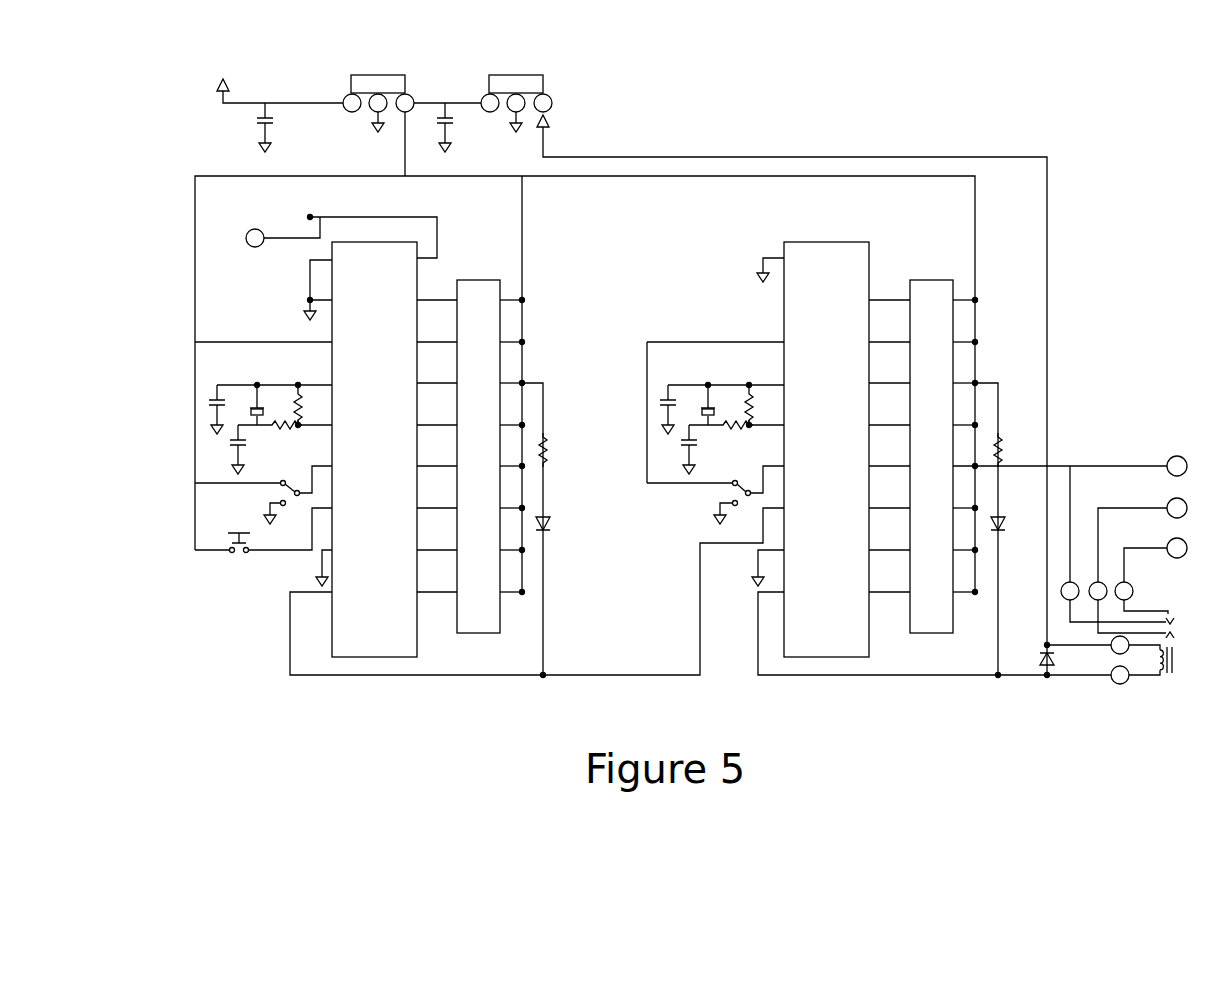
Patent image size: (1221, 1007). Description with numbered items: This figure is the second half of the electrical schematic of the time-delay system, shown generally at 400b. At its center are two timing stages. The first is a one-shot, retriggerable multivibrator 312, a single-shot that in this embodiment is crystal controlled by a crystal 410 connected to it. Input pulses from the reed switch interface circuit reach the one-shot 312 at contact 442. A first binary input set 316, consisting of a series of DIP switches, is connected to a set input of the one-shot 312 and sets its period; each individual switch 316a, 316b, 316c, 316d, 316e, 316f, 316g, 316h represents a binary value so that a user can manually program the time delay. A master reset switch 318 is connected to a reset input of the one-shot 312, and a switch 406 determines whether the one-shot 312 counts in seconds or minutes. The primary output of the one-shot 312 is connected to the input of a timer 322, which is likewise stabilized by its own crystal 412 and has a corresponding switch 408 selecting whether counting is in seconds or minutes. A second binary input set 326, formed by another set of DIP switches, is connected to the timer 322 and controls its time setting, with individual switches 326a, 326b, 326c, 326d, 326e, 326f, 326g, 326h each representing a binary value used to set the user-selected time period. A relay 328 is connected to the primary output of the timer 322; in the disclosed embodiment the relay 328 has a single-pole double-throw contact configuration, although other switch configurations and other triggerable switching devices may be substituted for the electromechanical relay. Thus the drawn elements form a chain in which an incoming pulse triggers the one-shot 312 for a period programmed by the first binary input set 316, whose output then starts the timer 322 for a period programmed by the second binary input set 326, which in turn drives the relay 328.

The electrical schematic diagram 400b is at (1068, 108).
The one-shot retriggerable multivibrator 312 is at (367, 246).
The binary input set T1 316 is at (458, 280).
The individual DIP switch 316a is at (488, 301).
The individual DIP switch 316b is at (488, 343).
The individual DIP switch 316c is at (490, 385).
The individual DIP switch 316d is at (490, 427).
The individual DIP switch 316e is at (490, 468).
The individual DIP switch 316f is at (490, 509).
The individual DIP switch 316g is at (490, 552).
The individual DIP switch 316h is at (490, 594).
The master reset switch 318 is at (228, 554).
The timer 322 is at (821, 246).
The binary input set T2 326 is at (910, 280).
The individual DIP switch 326a is at (943, 302).
The individual DIP switch 326b is at (943, 343).
The individual DIP switch 326c is at (943, 385).
The individual DIP switch 326d is at (945, 427).
The individual DIP switch 326e is at (945, 510).
The individual DIP switch 326f is at (1072, 469).
The individual DIP switch 326g is at (945, 552).
The individual DIP switch 326h is at (947, 598).
The relay 328 is at (1139, 597).
The seconds/minutes switch 406 is at (284, 494).
The seconds/minutes switch 408 is at (736, 491).
The crystal 410 is at (257, 384).
The crystal 412 is at (708, 384).
The contact 442 is at (257, 247).